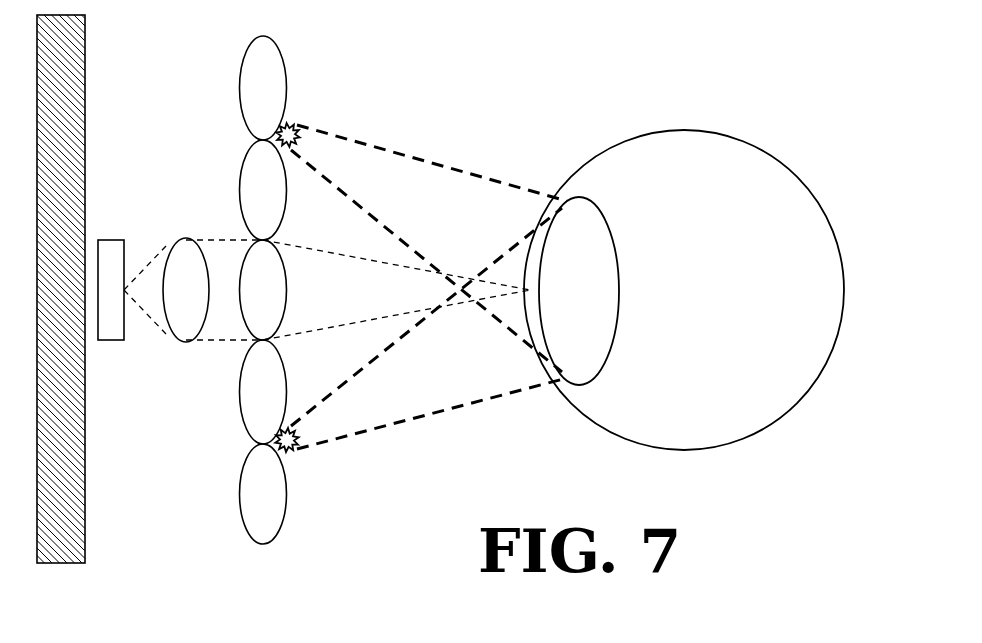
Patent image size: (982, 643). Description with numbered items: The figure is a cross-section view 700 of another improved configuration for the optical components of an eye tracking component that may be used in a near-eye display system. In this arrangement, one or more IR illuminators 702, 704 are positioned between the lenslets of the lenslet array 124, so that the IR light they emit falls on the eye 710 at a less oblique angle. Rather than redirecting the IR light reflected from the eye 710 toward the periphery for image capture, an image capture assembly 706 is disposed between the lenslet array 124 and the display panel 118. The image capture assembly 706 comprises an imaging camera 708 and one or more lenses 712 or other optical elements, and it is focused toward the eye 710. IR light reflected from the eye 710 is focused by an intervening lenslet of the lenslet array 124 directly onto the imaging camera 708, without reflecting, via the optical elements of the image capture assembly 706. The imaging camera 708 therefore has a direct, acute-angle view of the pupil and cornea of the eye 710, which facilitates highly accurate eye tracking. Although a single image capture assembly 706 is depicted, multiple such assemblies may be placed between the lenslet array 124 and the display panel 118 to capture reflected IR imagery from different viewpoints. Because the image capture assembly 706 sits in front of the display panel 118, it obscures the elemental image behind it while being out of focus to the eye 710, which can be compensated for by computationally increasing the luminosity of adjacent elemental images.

The display panel 118 is at (58, 563).
The lenslet array 124 is at (227, 108).
The cross-section view 700 is at (557, 103).
The IR illuminator 702 is at (301, 126).
The IR illuminator 704 is at (295, 450).
The image capture assembly 706 is at (147, 352).
The imaging camera 708 is at (111, 240).
The eye 710 is at (741, 140).
The lenses 712 is at (182, 238).